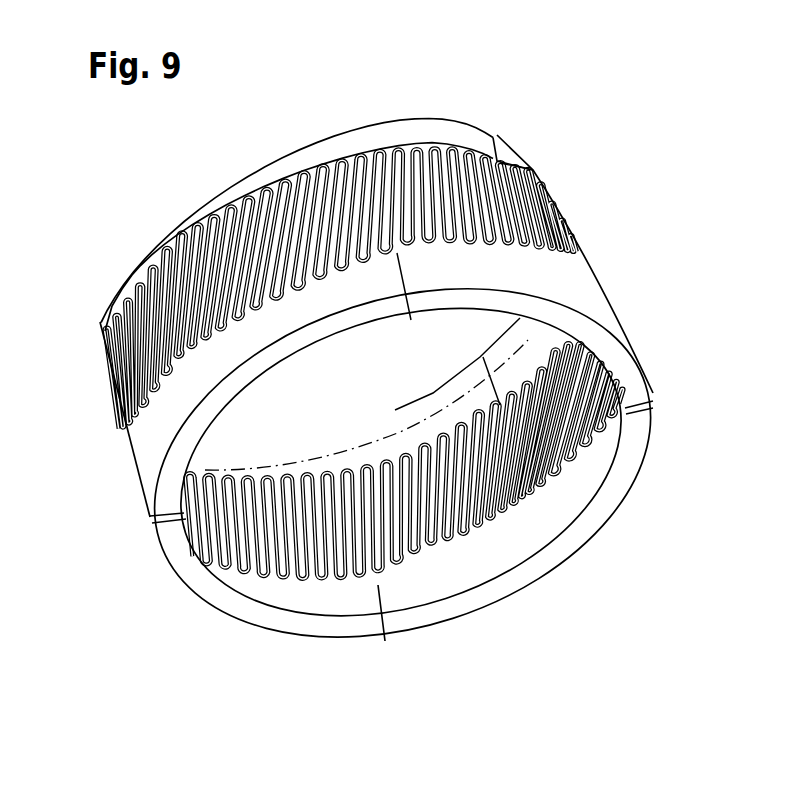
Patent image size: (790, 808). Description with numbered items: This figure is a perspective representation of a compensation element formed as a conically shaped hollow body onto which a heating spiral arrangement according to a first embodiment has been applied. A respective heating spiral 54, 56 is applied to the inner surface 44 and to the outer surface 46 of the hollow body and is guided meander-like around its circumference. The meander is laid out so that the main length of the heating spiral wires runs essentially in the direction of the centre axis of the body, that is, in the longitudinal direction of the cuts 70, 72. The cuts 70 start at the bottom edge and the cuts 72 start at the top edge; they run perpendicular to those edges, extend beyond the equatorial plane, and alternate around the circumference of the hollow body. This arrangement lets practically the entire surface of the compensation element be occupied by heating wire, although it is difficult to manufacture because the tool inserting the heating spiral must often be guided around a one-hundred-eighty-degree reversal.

The inner surface 44 is at (552, 503).
The outer surface 46 is at (420, 135).
The heating spiral 54 is at (463, 537).
The heating spiral 56 is at (556, 208).
The cut 70 is at (383, 645).
The cut 72 is at (183, 262).